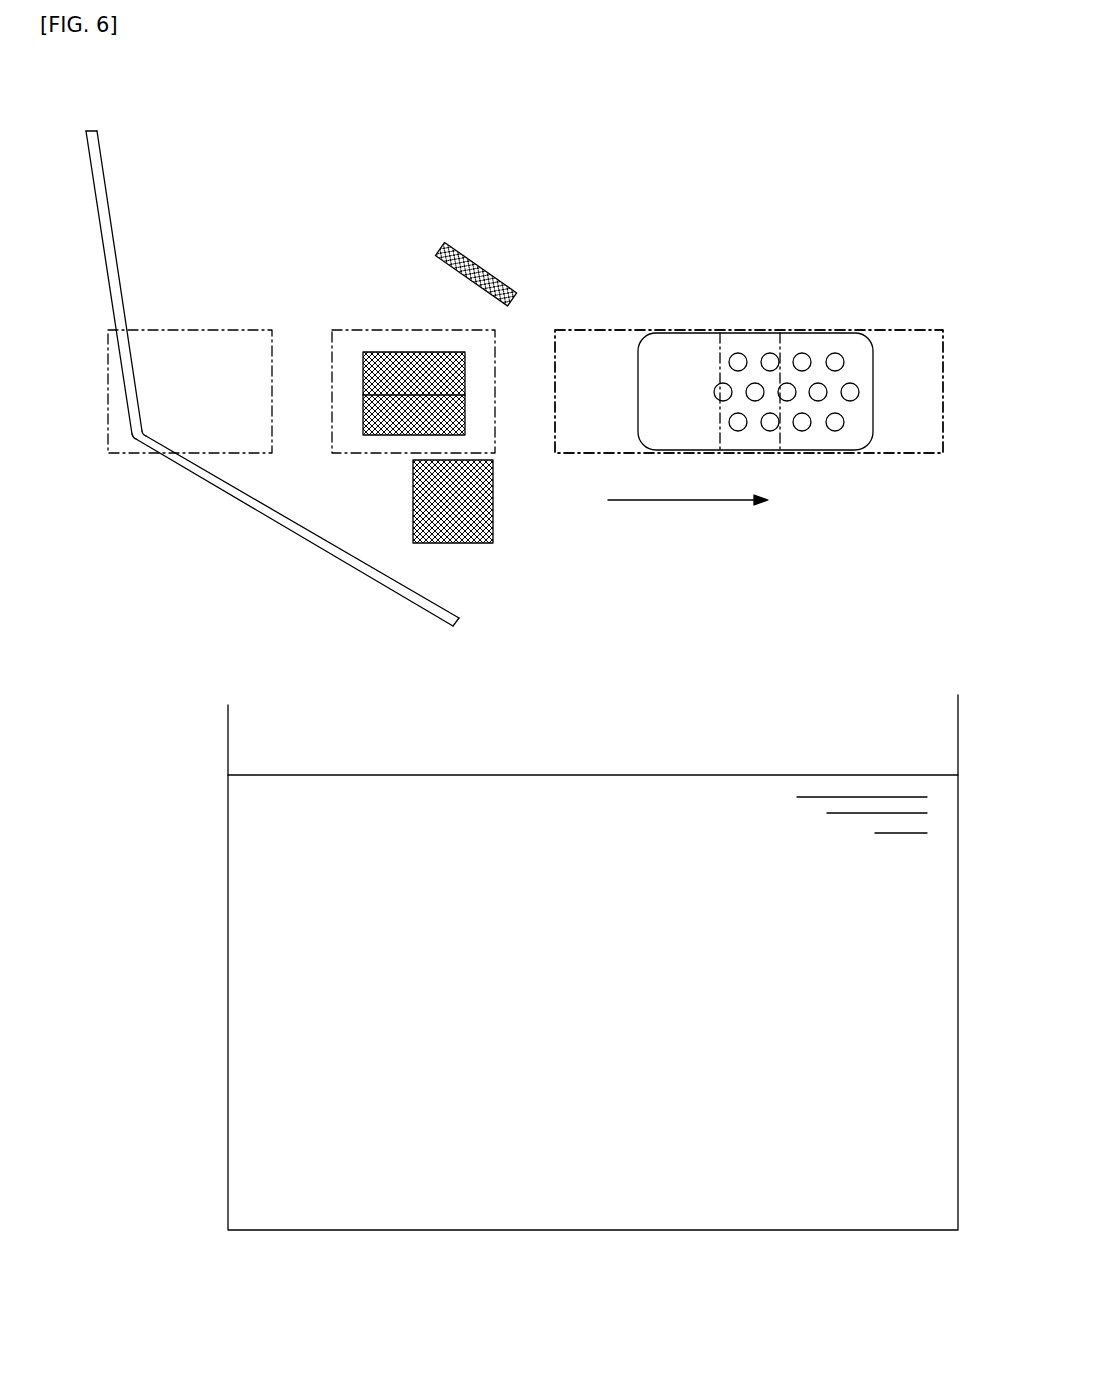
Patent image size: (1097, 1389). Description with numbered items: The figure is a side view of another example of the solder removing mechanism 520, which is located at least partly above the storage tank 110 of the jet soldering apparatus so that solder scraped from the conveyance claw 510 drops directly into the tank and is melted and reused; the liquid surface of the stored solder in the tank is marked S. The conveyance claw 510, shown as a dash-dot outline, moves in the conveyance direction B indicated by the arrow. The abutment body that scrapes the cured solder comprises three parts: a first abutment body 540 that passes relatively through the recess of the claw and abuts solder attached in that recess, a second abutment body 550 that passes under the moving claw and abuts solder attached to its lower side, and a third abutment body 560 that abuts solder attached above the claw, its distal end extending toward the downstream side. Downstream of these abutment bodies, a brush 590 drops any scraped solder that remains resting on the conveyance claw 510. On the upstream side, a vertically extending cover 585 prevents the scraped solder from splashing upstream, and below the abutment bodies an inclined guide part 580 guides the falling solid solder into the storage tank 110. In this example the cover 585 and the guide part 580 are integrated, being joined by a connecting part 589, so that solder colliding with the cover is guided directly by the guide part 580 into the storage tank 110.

The solder removing mechanism 520 is at (596, 126).
The cover 585 is at (108, 192).
The connecting part 589 is at (137, 437).
The guide part 580 is at (447, 627).
The first abutment body 540 is at (405, 348).
The third abutment body 560 is at (470, 244).
The second abutment body 550 is at (502, 508).
The conveyance claw 510 is at (607, 328).
The brush 590 is at (760, 330).
The storage tank 110 is at (229, 738).
The solution S is at (680, 775).